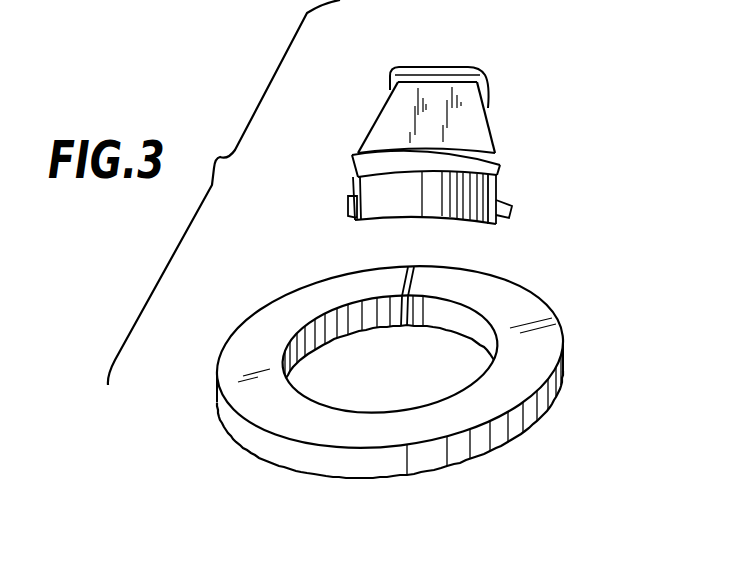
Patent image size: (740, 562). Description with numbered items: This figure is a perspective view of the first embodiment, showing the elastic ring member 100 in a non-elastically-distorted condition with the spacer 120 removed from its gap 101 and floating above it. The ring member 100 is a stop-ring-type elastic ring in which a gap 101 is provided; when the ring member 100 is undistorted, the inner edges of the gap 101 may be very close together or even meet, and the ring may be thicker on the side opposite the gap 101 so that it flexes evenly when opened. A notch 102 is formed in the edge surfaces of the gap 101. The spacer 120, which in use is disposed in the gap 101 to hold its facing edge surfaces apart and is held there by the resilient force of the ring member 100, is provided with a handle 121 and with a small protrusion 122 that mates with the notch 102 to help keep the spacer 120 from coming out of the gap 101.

The elastic ring member 100 is at (368, 358).
The gap 101 is at (410, 308).
The notch 102 is at (405, 268).
The spacer 120 is at (429, 145).
The handle 121 is at (385, 122).
The protrusion 122 is at (351, 171).